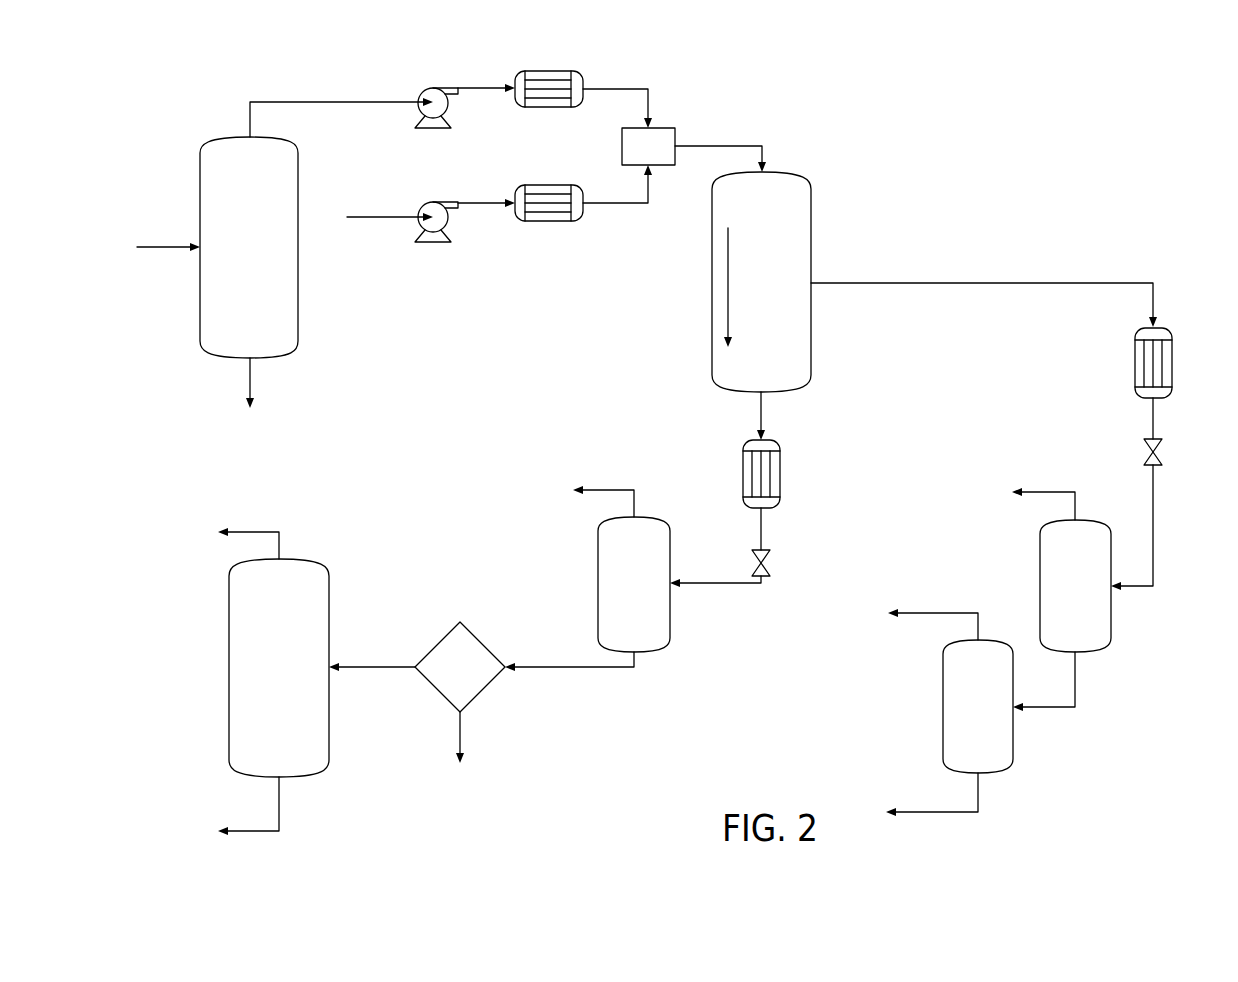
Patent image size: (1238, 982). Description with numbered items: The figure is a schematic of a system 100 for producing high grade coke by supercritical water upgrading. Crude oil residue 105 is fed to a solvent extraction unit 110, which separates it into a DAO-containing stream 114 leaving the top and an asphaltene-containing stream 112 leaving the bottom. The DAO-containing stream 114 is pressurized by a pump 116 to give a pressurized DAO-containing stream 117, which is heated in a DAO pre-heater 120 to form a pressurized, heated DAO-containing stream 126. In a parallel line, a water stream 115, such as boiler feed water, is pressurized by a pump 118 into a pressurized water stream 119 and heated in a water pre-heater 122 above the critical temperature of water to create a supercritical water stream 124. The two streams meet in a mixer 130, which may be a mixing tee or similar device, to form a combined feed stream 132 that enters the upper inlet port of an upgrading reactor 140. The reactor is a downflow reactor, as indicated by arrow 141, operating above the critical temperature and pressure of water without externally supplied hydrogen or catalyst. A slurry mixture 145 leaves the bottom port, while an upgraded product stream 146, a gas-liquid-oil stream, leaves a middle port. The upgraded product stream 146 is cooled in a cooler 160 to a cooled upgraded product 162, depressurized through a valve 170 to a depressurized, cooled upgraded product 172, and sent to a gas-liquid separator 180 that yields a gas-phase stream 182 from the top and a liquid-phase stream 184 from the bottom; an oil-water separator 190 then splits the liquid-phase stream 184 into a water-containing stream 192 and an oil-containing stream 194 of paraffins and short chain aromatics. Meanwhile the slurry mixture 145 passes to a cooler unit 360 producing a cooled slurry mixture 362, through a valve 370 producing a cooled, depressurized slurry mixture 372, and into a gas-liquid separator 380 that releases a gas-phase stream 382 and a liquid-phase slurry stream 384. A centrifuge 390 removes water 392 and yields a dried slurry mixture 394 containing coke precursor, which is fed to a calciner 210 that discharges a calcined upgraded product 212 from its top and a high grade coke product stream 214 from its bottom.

The system 100 is at (120, 82).
The crude oil residue 105 is at (153, 246).
The solvent extraction unit 110 is at (270, 259).
The asphaltene-containing stream 112 is at (250, 378).
The DAO-containing stream 114 is at (358, 101).
The water stream 115 is at (373, 216).
The pump 116 is at (438, 87).
The pressurized DAO-containing stream 117 is at (478, 87).
The pump 118 is at (438, 201).
The pressurized water stream 119 is at (490, 202).
The DAO pre-heater 120 is at (548, 70).
The water pre-heater 122 is at (548, 184).
The supercritical water stream 124 is at (623, 204).
The pressurized, heated DAO-containing stream 126 is at (623, 88).
The mixer 130 is at (667, 159).
The combined feed stream 132 is at (712, 145).
The upgrading reactor 140 is at (780, 295).
The arrow 141 is at (728, 324).
The slurry mixture 145 is at (761, 413).
The upgraded product stream 146 is at (970, 282).
The cooler 160 is at (1172, 365).
The cooled upgraded product 162 is at (1153, 421).
The valve 170 is at (1146, 445).
The depressurized, cooled upgraded product 172 is at (1153, 527).
The gas-liquid separator 180 is at (1095, 598).
The gas-phase stream 182 is at (1048, 491).
The liquid-phase stream 184 is at (1048, 708).
The oil-water separator 190 is at (998, 717).
The water-containing stream 192 is at (930, 612).
The oil-containing stream 194 is at (930, 811).
The calciner 210 is at (299, 679).
The calcined upgraded product 212 is at (258, 531).
The high grade coke product stream 214 is at (279, 808).
The cooler unit 360 is at (780, 473).
The cooled slurry mixture 362 is at (761, 533).
The valve 370 is at (752, 556).
The cooled, depressurized slurry mixture 372 is at (720, 584).
The gas-liquid separator 380 is at (654, 597).
The gas-phase stream 382 is at (605, 489).
The liquid-phase slurry stream 384 is at (548, 666).
The centrifuge 390 is at (480, 679).
The water 392 is at (460, 737).
The dried slurry mixture 394 is at (383, 666).